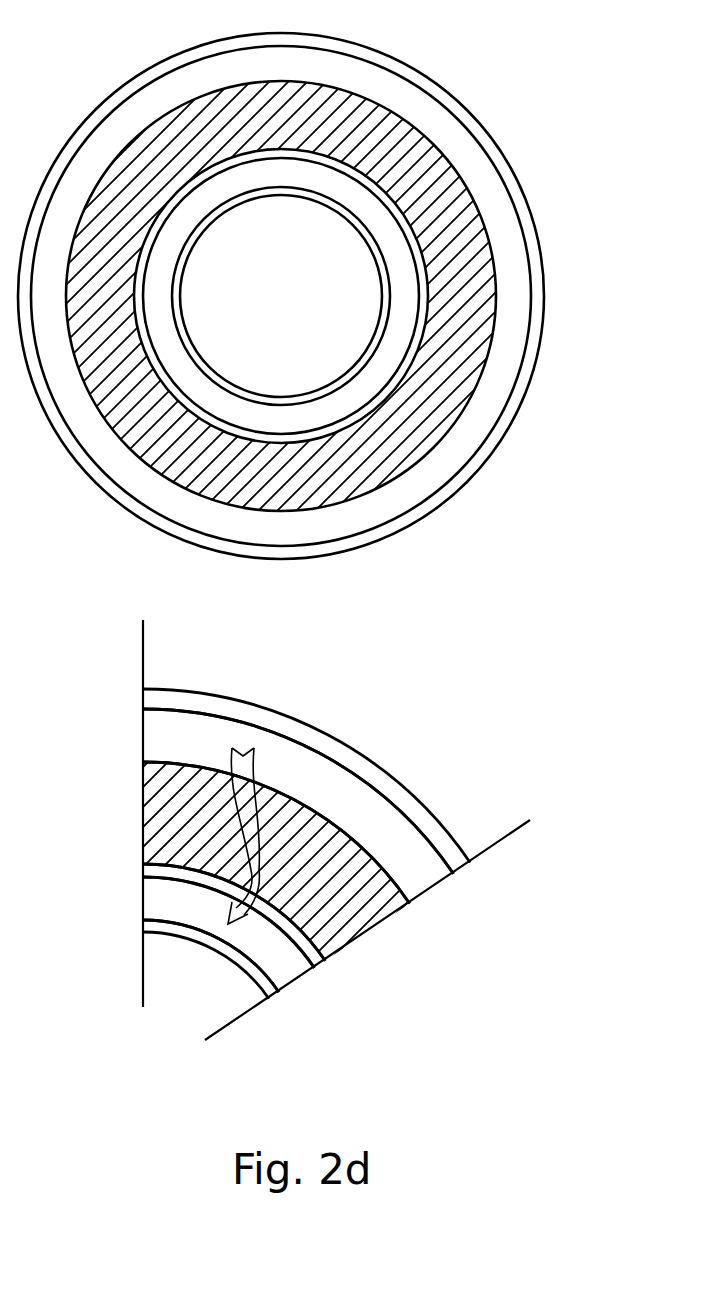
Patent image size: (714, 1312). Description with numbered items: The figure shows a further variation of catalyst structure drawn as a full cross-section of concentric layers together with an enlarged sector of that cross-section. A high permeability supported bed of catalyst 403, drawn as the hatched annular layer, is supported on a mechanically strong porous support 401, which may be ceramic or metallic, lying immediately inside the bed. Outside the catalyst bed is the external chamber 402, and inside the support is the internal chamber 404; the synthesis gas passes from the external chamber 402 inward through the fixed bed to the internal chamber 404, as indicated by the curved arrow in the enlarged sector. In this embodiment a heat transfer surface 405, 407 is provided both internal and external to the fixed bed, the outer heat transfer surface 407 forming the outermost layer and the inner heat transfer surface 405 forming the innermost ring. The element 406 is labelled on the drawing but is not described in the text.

The porous support 401 is at (325, 963).
The external chamber 402 is at (428, 873).
The supported bed of catalyst 403 is at (382, 923).
The internal chamber 404 is at (287, 967).
The heat transfer surface 405 is at (245, 968).
The lumen 406 is at (217, 1022).
The heat transfer surface 407 is at (322, 737).